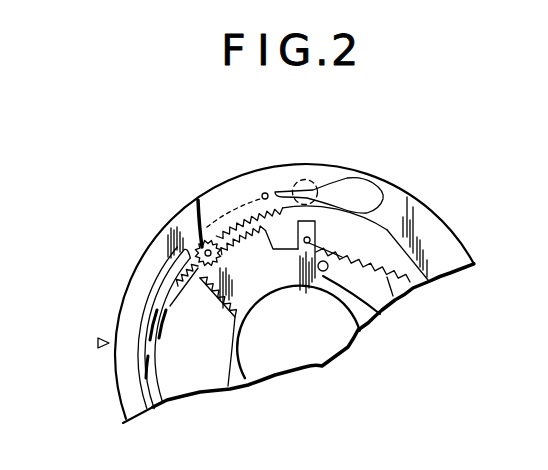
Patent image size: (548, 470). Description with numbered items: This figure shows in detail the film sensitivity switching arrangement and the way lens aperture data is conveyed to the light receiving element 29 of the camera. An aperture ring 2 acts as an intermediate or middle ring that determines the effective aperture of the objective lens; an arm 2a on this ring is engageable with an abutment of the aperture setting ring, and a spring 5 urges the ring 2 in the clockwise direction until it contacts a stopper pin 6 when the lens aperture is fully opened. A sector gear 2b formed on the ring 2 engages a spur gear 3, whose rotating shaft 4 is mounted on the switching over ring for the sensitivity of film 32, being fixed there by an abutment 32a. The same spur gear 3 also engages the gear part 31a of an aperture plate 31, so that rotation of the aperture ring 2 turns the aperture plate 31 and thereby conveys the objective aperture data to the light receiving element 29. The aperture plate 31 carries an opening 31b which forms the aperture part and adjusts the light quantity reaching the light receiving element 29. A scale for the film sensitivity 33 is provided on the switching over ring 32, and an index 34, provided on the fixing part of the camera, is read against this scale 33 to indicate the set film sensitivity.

The aperture ring 2 is at (210, 296).
The arm 2a is at (316, 233).
The sector gear 2b is at (264, 238).
The spur gear 3 is at (204, 253).
The rotating shaft 4 is at (200, 250).
The spring 5 is at (393, 300).
The stopper pin 6 is at (325, 273).
The light receiving element 29 is at (305, 179).
The aperture plate 31 is at (363, 177).
The gear part 31a is at (232, 222).
The opening 31b is at (263, 193).
The switching over ring for the sensitivity of film 32 is at (148, 250).
The abutment 32a is at (190, 287).
The scale for the film sensitivity 33 is at (120, 373).
The index 34 is at (98, 344).